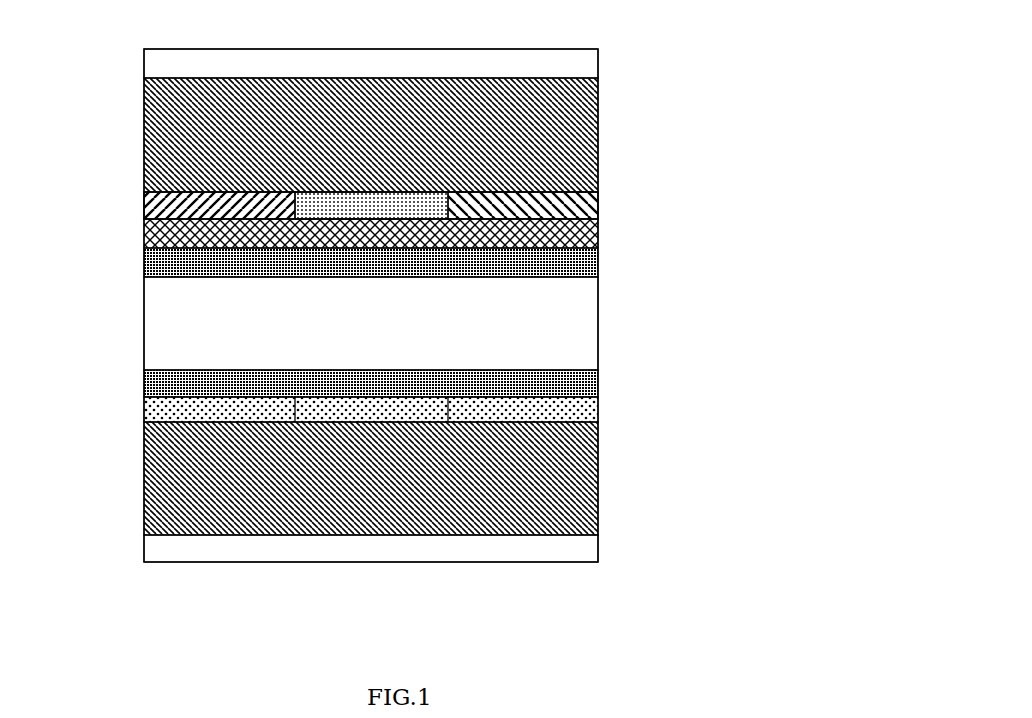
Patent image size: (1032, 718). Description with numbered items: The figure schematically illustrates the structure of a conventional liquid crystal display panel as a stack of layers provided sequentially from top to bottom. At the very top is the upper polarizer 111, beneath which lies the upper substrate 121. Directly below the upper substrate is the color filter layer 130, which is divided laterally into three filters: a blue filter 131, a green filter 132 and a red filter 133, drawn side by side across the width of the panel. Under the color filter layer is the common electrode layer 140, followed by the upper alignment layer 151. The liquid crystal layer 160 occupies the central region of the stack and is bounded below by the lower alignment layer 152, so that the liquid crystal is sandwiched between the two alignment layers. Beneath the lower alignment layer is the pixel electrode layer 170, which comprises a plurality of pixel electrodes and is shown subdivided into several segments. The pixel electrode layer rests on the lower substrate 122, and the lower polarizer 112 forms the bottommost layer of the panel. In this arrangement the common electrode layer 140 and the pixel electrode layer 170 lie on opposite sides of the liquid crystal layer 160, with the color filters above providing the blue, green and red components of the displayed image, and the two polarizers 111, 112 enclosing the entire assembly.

The upper polarizer 111 is at (598, 65).
The lower polarizer 112 is at (598, 550).
The upper substrate 121 is at (598, 162).
The lower substrate 122 is at (598, 472).
The color filter layer 130 is at (365, 191).
The blue filter 131 is at (152, 197).
The green filter 132 is at (327, 213).
The red filter 133 is at (598, 193).
The common electrode layer 140 is at (598, 245).
The upper alignment layer 151 is at (598, 268).
The lower alignment layer 152 is at (598, 380).
The liquid crystal layer 160 is at (598, 330).
The pixel electrode layer 170 is at (146, 402).